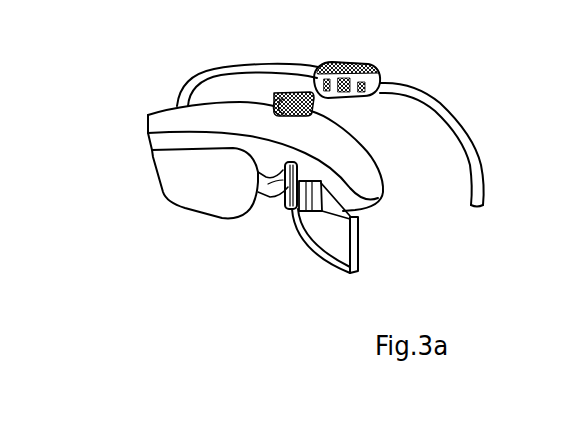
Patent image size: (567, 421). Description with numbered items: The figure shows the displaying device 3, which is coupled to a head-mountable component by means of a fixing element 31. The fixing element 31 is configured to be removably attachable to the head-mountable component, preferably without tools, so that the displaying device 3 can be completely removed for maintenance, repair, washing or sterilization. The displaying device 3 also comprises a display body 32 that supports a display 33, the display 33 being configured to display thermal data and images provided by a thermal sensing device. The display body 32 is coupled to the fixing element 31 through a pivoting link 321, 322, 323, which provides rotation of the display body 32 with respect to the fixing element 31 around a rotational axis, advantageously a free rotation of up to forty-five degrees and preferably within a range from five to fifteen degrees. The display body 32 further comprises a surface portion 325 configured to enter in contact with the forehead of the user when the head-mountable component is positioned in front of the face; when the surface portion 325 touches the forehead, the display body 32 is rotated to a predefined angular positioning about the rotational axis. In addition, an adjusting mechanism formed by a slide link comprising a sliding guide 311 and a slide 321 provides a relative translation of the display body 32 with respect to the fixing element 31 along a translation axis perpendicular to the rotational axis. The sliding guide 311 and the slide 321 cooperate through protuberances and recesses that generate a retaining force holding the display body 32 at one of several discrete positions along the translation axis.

The displaying device 3 is at (112, 60).
The fixing element 31 is at (431, 89).
The sliding guide 311 is at (346, 101).
The display body 32 is at (150, 147).
The slide 321 is at (295, 92).
The pivoting link element 322 is at (278, 112).
The pivoting link element 323 is at (303, 115).
The surface portion 325 is at (231, 121).
The display 33 is at (290, 205).